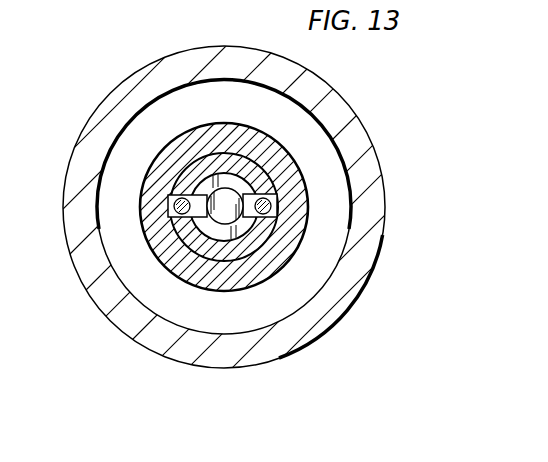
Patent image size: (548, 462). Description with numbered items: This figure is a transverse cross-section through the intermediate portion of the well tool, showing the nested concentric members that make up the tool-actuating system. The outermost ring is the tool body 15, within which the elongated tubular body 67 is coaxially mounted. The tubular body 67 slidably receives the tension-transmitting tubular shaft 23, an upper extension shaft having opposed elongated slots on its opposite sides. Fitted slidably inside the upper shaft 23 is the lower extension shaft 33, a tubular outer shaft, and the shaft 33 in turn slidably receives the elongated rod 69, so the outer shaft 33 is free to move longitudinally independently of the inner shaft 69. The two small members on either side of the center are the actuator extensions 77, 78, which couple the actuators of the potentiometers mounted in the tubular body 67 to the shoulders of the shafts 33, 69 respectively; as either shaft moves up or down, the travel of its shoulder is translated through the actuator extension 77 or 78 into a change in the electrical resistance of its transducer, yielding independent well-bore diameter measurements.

The tool body 15 is at (368, 173).
The elongated tubular body 67 is at (283, 247).
The tubular shaft 23 is at (220, 250).
The elongated rod 69 is at (212, 190).
The actuator extension 78 is at (168, 222).
The actuator extension 77 is at (277, 208).
The lower extension shaft 33 is at (244, 184).